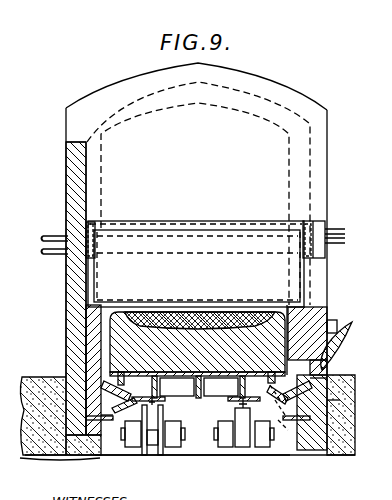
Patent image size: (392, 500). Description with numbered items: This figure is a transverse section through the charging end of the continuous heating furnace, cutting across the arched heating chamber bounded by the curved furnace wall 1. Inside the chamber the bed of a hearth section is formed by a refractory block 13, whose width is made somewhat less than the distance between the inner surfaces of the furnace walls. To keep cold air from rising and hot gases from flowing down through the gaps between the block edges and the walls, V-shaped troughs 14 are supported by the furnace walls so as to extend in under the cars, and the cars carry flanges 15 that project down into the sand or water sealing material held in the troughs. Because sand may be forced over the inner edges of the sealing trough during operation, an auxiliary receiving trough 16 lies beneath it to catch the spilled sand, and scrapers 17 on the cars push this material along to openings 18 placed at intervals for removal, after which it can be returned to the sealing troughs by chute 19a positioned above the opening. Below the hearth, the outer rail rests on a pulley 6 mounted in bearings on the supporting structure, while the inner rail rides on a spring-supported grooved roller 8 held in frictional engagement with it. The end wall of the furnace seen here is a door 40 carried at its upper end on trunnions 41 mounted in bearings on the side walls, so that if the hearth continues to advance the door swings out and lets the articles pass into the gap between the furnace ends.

The inner wall 1 is at (72, 165).
The pulleys 6 is at (236, 414).
The grooved rollers 8 is at (166, 414).
The refractory blocks 13 is at (133, 333).
The V-shaped troughs 14 is at (330, 382).
The flanges 15 is at (118, 380).
The receiving trough 16 is at (262, 438).
The scrapers 17 is at (330, 400).
The openings 18 is at (345, 325).
The track 19a is at (280, 440).
The door 40 is at (173, 264).
The trunnions 41 is at (318, 252).